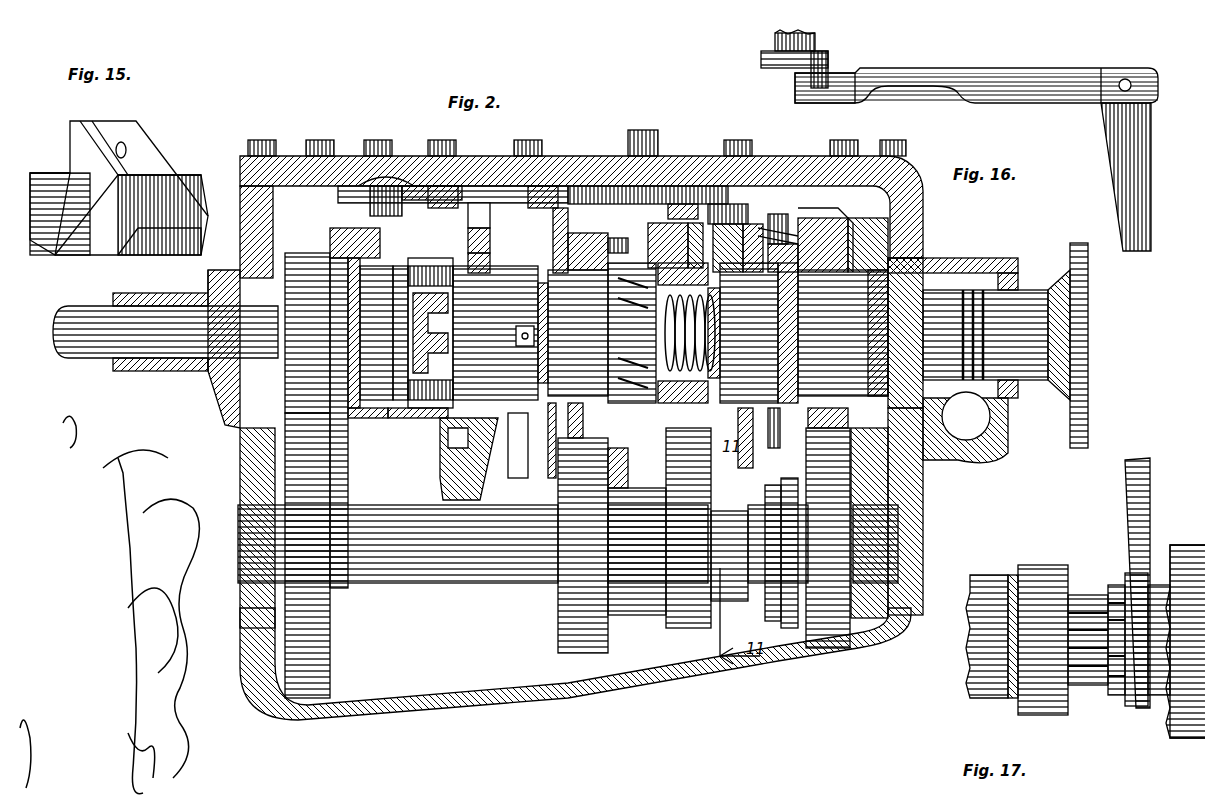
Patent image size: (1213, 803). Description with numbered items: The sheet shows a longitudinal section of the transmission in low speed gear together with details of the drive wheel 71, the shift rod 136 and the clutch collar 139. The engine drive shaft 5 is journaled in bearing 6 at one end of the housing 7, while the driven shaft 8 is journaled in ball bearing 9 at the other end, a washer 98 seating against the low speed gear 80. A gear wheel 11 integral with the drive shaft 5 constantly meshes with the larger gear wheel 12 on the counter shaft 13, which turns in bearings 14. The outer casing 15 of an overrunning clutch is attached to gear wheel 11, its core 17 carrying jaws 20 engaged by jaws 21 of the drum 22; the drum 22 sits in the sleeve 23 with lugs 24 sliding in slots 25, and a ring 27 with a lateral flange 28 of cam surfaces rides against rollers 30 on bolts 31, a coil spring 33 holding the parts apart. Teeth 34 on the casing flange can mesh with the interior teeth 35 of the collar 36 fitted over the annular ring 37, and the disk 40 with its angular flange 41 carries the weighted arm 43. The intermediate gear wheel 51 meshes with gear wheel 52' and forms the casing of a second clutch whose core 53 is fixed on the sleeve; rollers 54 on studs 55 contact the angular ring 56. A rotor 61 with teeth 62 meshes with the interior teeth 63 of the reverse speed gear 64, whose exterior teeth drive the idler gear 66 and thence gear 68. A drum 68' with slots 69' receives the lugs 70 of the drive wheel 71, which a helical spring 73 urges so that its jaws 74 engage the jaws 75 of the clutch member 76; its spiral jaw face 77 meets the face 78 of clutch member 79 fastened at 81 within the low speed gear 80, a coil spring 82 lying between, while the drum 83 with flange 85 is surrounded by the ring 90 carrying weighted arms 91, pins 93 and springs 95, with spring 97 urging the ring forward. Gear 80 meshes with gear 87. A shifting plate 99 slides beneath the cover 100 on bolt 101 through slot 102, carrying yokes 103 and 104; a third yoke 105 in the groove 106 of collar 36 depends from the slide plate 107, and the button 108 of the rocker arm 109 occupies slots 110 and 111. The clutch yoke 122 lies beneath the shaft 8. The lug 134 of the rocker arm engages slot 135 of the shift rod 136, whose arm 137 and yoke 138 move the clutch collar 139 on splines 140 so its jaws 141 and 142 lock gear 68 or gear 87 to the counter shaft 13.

In FIG. 2, the drive shaft 5 is at (85, 345).
In FIG. 2, the bearing 6 is at (205, 392).
In FIG. 2, the transmission housing 7 is at (232, 492).
In FIG. 2, the driven shaft 8 is at (1015, 283).
In FIG. 2, the bearing 9 is at (925, 262).
In FIG. 2, the gear wheel 11 is at (288, 262).
In FIG. 2, the gear wheel 12 is at (300, 615).
In FIG. 2, the counter shaft 13 is at (732, 580).
In FIG. 17, the counter shaft 13 is at (1068, 632).
In FIG. 2, the bearings 14 is at (232, 572).
In FIG. 2, the outer casing 15 is at (346, 250).
In FIG. 2, the core 17 is at (350, 412).
In FIG. 2, the jaws 20 is at (395, 322).
In FIG. 2, the jaws 21 is at (430, 338).
In FIG. 2, the drum 22 is at (505, 440).
In FIG. 2, the sleeve 23 is at (520, 448).
In FIG. 2, the lugs 24 is at (475, 470).
In FIG. 2, the longitudinal slots 25 is at (483, 288).
In FIG. 2, the ring 27 is at (400, 412).
In FIG. 2, the lateral flange 28 is at (425, 262).
In FIG. 2, the rollers 30 is at (392, 262).
In FIG. 2, the bolts 31 is at (410, 262).
In FIG. 2, the coil spring 33 is at (380, 412).
In FIG. 2, the teeth 34 is at (418, 412).
In FIG. 2, the interior teeth 35 is at (486, 232).
In FIG. 2, the collar 36 is at (486, 212).
In FIG. 2, the annular ring 37 is at (488, 254).
In FIG. 2, the disk 40 is at (515, 472).
In FIG. 2, the angular flange 41 is at (545, 470).
In FIG. 2, the weighted arm 43 is at (571, 235).
In FIG. 2, the gear wheel 51 is at (595, 425).
In FIG. 2, the gear wheel 52' is at (565, 555).
In FIG. 2, the core 53 is at (600, 328).
In FIG. 2, the rollers 54 is at (610, 228).
In FIG. 2, the studs 55 is at (650, 228).
In FIG. 2, the angular ring 56 is at (688, 215).
In FIG. 2, the rotor 61 is at (669, 323).
In FIG. 2, the teeth 62 is at (640, 280).
In FIG. 2, the interior teeth 63 is at (712, 196).
In FIG. 2, the reverse speed gear 64 is at (668, 395).
In FIG. 2, the idler gear 66 is at (660, 455).
In FIG. 2, the gear 68 is at (682, 543).
In FIG. 17, the gear 68 is at (1038, 622).
In FIG. 2, the drum 68' is at (765, 189).
In FIG. 2, the slots 69' is at (733, 196).
In FIG. 15, the lugs 70 is at (126, 126).
In FIG. 2, the lugs 70 is at (775, 206).
In FIG. 15, the drive wheel 71 is at (36, 160).
In FIG. 2, the drive wheel 71 is at (712, 318).
In FIG. 2, the helical spring 73 is at (669, 350).
In FIG. 15, the jaws 74 is at (176, 222).
In FIG. 2, the jaws 74 is at (712, 340).
In FIG. 2, the jaws 75 is at (785, 330).
In FIG. 2, the clutch member 76 is at (770, 280).
In FIG. 2, the spiral jaw face 77 is at (758, 450).
In FIG. 2, the spiral jaw face 78 is at (848, 225).
In FIG. 2, the clutch member 79 is at (912, 240).
In FIG. 2, the low speed gear 80 is at (905, 482).
In FIG. 2, the fastening 81 is at (915, 462).
In FIG. 2, the coil spring 82 is at (737, 443).
In FIG. 2, the drum 83 is at (830, 210).
In FIG. 2, the upstanding flange 85 is at (862, 178).
In FIG. 2, the gear 87 is at (875, 625).
In FIG. 17, the gear 87 is at (1170, 730).
In FIG. 2, the ring 90 is at (810, 210).
In FIG. 2, the weighted arcuate arms 91 is at (835, 470).
In FIG. 2, the pins 93 is at (800, 210).
In FIG. 2, the spring 95 is at (758, 470).
In FIG. 2, the spring 97 is at (872, 372).
In FIG. 2, the washer 98 is at (905, 215).
In FIG. 2, the shifting plate 99 is at (570, 178).
In FIG. 2, the cover 100 is at (270, 160).
In FIG. 2, the bolt 101 is at (636, 120).
In FIG. 2, the longitudinal slot 102 is at (675, 178).
In FIG. 2, the yoke 103 is at (770, 236).
In FIG. 2, the second yoke 104 is at (540, 178).
In FIG. 2, the third yoke 105 is at (478, 178).
In FIG. 2, the groove 106 is at (445, 432).
In FIG. 2, the slide plate 107 is at (345, 178).
In FIG. 2, the button 108 is at (378, 178).
In FIG. 16, the rocker arm 109 is at (753, 54).
In FIG. 2, the slot 110 is at (445, 178).
In FIG. 2, the slot 111 is at (431, 198).
In FIG. 2, the clutch yoke 122 is at (462, 490).
In FIG. 16, the lug 134 is at (822, 55).
In FIG. 16, the slot 135 is at (787, 73).
In FIG. 16, the shift rod 136 is at (918, 62).
In FIG. 16, the arm 137 is at (1115, 177).
In FIG. 17, the yoke 138 is at (1125, 530).
In FIG. 17, the clutch collar 139 is at (1137, 700).
In FIG. 17, the splines 140 is at (1085, 650).
In FIG. 2, the jaws 141 is at (747, 605).
In FIG. 17, the jaws 141 is at (1108, 577).
In FIG. 2, the jaws 142 is at (790, 640).
In FIG. 17, the jaws 142 is at (1150, 577).